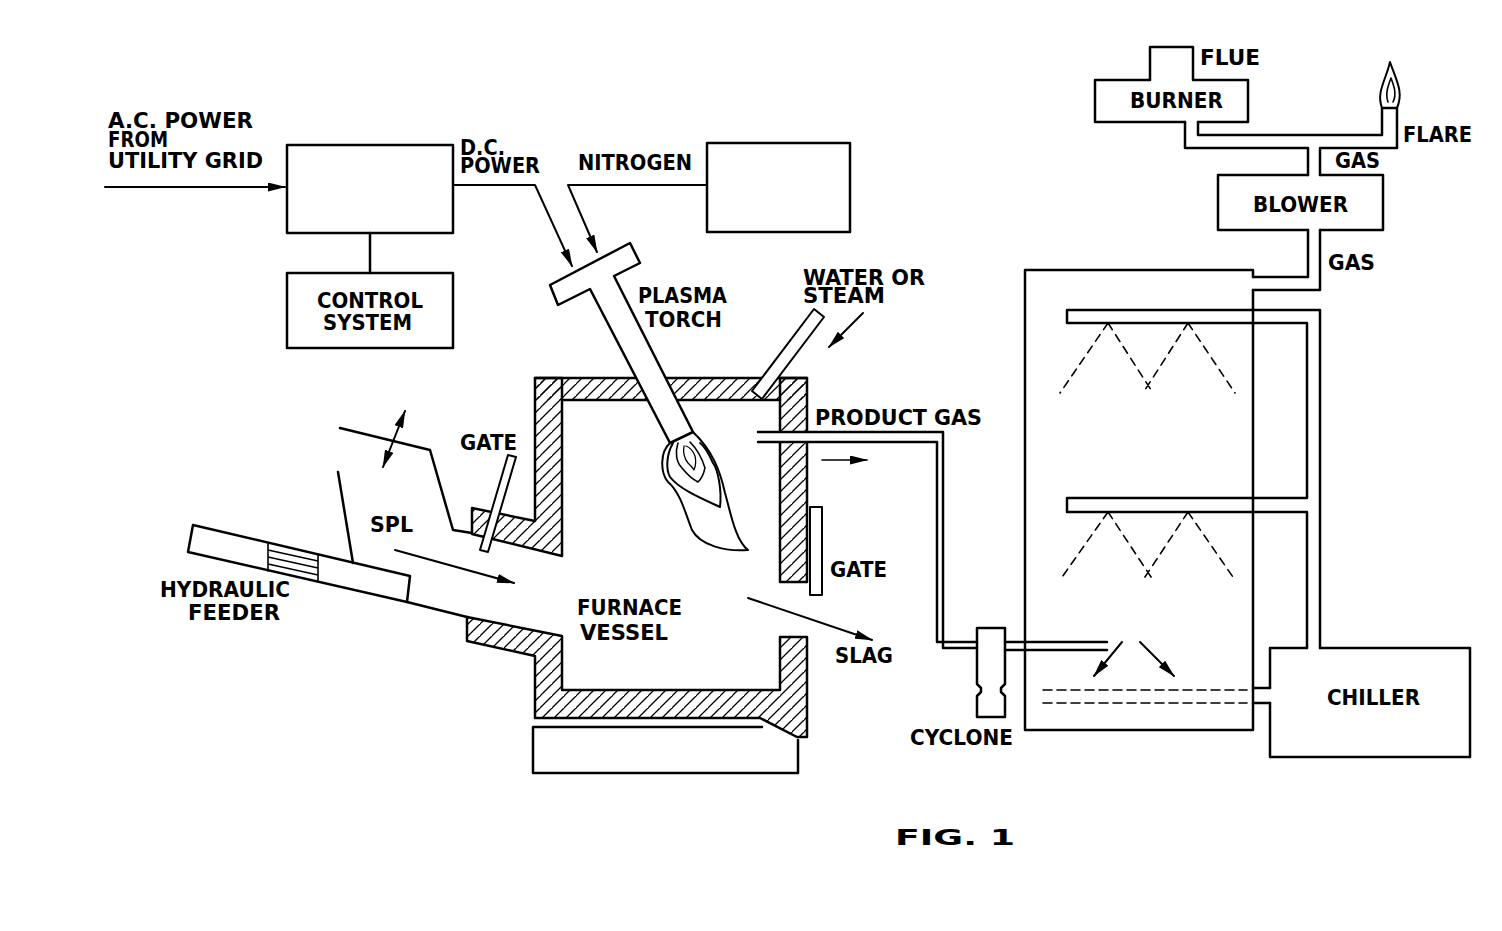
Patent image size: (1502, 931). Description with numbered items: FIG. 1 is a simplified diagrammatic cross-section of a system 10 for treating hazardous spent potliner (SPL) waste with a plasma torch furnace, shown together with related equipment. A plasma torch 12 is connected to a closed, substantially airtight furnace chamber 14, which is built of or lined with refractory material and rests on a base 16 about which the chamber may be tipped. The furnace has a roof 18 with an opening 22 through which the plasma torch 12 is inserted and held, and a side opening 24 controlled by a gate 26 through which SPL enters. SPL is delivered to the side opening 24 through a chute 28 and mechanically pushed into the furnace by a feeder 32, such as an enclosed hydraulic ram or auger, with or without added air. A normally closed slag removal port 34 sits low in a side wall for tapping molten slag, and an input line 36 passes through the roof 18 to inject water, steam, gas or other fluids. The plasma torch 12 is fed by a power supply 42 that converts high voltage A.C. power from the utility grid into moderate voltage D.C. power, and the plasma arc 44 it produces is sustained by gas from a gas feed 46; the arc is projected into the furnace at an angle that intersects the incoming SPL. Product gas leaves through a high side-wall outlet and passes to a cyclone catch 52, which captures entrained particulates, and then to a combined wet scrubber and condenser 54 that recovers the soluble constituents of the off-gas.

The system 10 is at (617, 522).
The plasma torch 12 is at (617, 355).
The furnace chamber 14 is at (810, 480).
The base 16 is at (688, 774).
The roof 18 is at (737, 378).
The opening 22 is at (668, 378).
The side opening 24 is at (547, 555).
The gate 26 is at (497, 490).
The chute 28 is at (345, 515).
The feeder 32 is at (330, 586).
The slag removal port 34 is at (795, 587).
The input line 36 is at (805, 328).
The power supply 42 is at (393, 145).
The plasma arc 44 is at (665, 482).
The gas feed 46 is at (755, 143).
The cyclone catch 52 is at (975, 668).
The combined wet scrubber and condenser 54 is at (1052, 292).